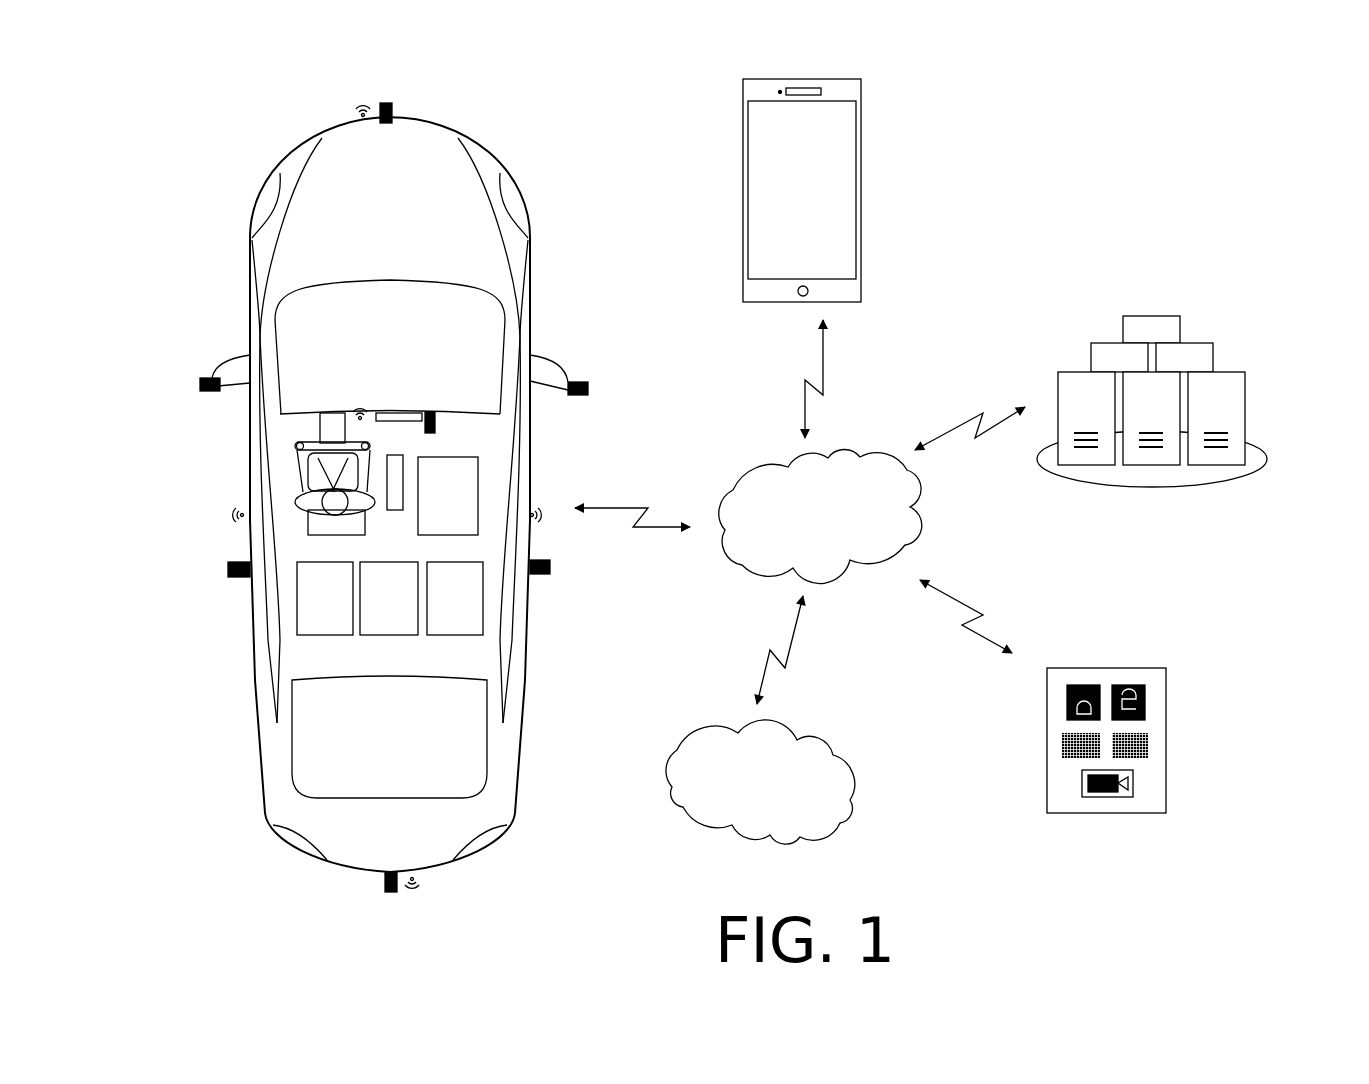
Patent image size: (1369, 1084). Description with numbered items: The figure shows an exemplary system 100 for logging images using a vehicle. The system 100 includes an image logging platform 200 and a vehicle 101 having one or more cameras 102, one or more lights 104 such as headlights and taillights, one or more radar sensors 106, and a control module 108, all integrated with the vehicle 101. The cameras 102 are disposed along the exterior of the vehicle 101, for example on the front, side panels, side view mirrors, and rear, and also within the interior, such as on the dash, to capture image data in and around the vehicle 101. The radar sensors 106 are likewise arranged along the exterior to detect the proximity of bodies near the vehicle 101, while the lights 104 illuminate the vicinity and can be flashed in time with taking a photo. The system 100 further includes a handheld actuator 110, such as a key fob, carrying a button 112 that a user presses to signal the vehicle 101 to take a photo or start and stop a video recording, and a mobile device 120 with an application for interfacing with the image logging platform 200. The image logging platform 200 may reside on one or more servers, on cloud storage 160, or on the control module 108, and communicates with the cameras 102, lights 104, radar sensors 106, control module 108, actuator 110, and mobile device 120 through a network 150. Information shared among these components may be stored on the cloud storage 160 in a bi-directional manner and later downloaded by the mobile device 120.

The system 100 is at (1125, 105).
The vehicle 101 is at (228, 138).
The cameras 102 is at (393, 110).
The lights 104 is at (268, 208).
The radar sensors 106 is at (357, 112).
The control module 108 is at (392, 412).
The handheld actuator 110 is at (1160, 748).
The button 112 is at (1133, 790).
The mobile device 120 is at (744, 80).
The network 150 is at (820, 516).
The cloud storage 160 is at (760, 782).
The image logging platform 200 is at (1245, 372).